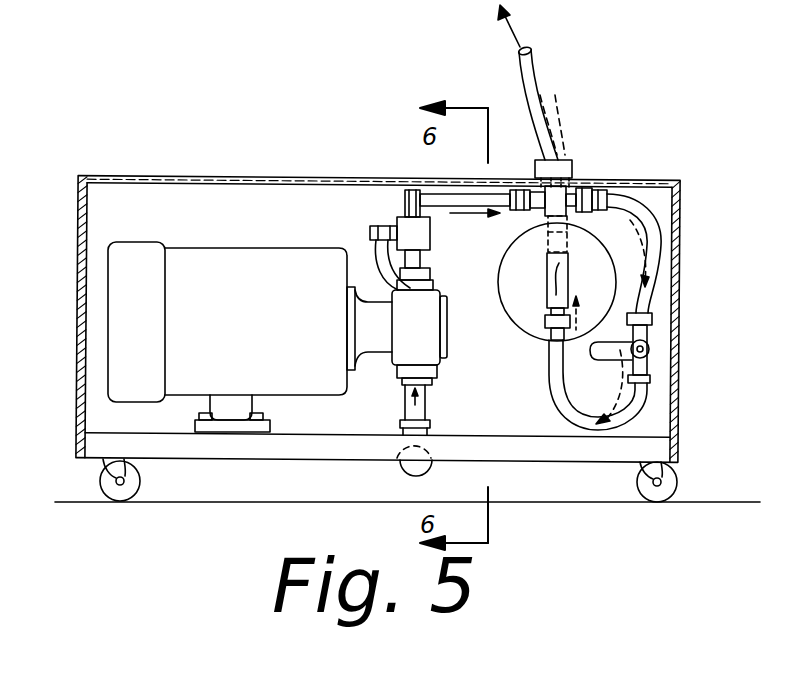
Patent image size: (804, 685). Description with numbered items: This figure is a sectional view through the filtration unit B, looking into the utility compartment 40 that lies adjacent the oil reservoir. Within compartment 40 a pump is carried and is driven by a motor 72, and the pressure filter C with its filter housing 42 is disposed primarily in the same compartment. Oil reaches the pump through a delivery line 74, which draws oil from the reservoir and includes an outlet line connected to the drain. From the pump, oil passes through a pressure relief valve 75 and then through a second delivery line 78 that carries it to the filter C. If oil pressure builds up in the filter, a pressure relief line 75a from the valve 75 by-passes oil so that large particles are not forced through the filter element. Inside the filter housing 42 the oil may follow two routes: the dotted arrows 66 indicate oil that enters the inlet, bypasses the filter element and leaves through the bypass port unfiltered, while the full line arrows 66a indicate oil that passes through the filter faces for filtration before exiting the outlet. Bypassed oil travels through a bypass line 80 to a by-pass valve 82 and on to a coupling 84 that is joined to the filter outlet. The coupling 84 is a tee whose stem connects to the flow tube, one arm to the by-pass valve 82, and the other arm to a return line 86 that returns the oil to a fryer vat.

The filtration unit B is at (222, 137).
The pressure filter C is at (604, 236).
The utility compartment 40 is at (170, 192).
The filter housing 42 is at (507, 257).
The dotted arrows 66 is at (565, 117).
The full line arrows 66a is at (548, 283).
The motor 72 is at (248, 336).
The delivery line 74 is at (427, 416).
The pressure relief valve 75 is at (397, 222).
The pressure relief line 75a is at (374, 249).
The second delivery line 78 is at (423, 188).
The bypass line 80 is at (678, 204).
The by-pass valve 82 is at (655, 334).
The coupling 84 is at (550, 298).
The return line 86 is at (540, 55).